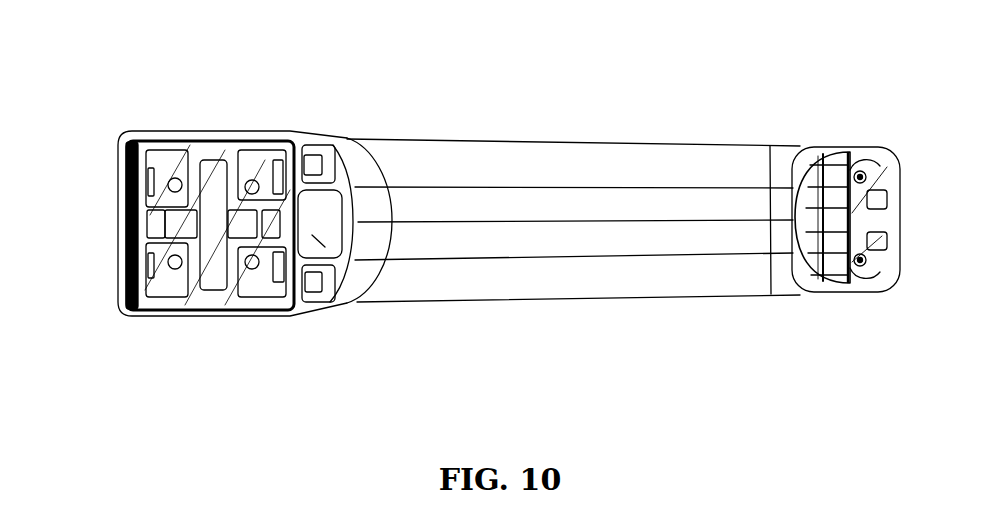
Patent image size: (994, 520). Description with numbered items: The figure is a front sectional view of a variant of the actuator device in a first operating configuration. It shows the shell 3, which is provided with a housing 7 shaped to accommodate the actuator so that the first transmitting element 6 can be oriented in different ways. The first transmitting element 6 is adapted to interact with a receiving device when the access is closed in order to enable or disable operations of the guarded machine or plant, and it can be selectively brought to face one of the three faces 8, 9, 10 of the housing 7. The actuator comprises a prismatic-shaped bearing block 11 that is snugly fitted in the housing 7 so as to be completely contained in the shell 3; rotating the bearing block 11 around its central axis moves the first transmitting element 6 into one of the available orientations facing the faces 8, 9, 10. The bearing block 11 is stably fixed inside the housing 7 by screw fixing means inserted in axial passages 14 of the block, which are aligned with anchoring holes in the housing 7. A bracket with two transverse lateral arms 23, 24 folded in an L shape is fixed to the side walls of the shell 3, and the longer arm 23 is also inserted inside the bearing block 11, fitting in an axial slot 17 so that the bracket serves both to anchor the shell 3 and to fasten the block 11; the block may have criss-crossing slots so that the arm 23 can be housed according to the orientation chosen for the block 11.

The shell 3 is at (601, 170).
The first transmitting element 6 is at (120, 223).
The housing 7 is at (352, 297).
The face 8 is at (113, 168).
The face 9 is at (223, 315).
The face 10 is at (219, 130).
The bearing block 11 is at (283, 137).
The axial passages 14 is at (277, 317).
The axial slot 17 is at (122, 272).
The transverse lateral arm 23 is at (197, 308).
The transverse lateral arm 24 is at (833, 268).